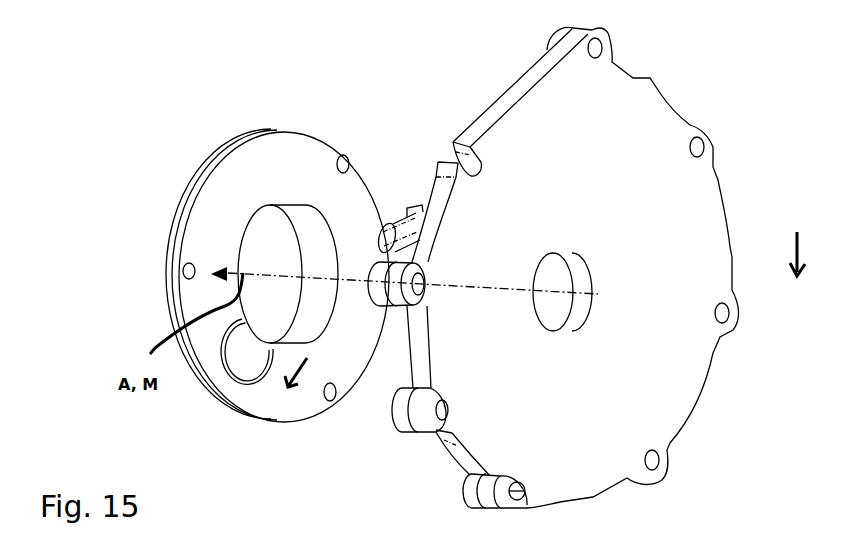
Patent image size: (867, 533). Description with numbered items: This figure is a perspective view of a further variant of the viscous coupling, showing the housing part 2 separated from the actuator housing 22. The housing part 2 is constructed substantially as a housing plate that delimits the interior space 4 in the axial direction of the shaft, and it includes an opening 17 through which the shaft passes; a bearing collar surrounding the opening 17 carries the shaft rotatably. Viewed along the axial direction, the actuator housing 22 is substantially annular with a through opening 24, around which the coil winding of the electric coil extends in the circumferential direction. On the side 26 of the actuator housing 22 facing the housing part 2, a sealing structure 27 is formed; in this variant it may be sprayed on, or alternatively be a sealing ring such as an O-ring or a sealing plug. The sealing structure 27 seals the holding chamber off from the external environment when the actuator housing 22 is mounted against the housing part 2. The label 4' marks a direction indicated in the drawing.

The housing part 2 is at (712, 80).
The interior space 4 is at (809, 254).
The mounting direction 4' is at (307, 371).
The opening 17 is at (566, 292).
The actuator housing 22 is at (262, 80).
The through opening 24 is at (289, 259).
The side 26 is at (306, 150).
The sealing structure 27 is at (246, 383).